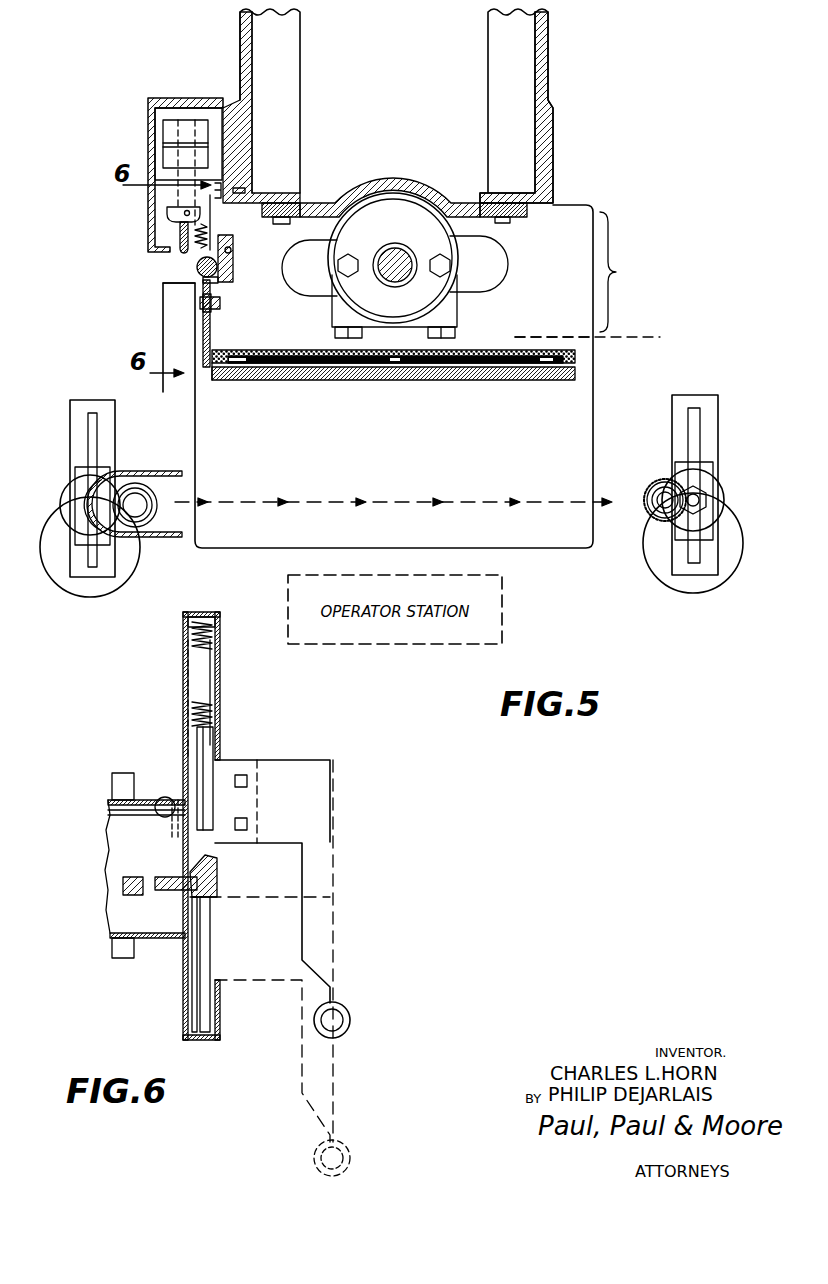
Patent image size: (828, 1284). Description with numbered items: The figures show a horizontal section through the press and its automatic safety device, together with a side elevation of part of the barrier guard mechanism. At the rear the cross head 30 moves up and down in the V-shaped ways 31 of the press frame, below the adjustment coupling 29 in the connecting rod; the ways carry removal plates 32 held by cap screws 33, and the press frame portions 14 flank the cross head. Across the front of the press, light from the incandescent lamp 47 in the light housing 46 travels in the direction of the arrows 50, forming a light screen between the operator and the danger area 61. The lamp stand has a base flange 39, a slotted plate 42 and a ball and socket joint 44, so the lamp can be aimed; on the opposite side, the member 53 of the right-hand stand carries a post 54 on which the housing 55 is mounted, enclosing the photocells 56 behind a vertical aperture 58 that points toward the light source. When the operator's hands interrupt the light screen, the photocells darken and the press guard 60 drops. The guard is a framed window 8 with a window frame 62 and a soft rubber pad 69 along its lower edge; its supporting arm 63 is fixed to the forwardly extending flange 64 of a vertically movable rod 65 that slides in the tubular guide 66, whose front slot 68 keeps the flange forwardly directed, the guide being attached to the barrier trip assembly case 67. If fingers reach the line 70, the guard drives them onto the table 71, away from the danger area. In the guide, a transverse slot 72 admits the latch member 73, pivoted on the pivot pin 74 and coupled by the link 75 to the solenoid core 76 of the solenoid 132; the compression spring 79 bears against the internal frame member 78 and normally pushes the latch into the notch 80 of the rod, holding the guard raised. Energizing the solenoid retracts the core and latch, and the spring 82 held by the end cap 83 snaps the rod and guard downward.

In FIG. 5, the framed window 8 is at (266, 361).
In FIG. 5, the frame tube 14 is at (553, 78).
In FIG. 5, the adjustment coupling 29 is at (389, 283).
In FIG. 5, the cross head 30 is at (364, 228).
In FIG. 5, the V-shaped ways 31 is at (318, 196).
In FIG. 5, the removal plates 32 is at (286, 219).
In FIG. 5, the cap screws 33 is at (283, 225).
In FIG. 5, the base flange 39 is at (50, 556).
In FIG. 5, the slotted plate 42 is at (70, 438).
In FIG. 5, the ball and socket joint 44 is at (65, 503).
In FIG. 5, the light housing 46 is at (148, 470).
In FIG. 5, the incandescent lamp 47 is at (153, 497).
In FIG. 5, the arrows 50 is at (268, 500).
In FIG. 5, the member of right-hand stand 53 is at (705, 492).
In FIG. 5, the post 54 is at (705, 499).
In FIG. 5, the housing 55 is at (652, 488).
In FIG. 5, the photocells 56 is at (661, 487).
In FIG. 5, the vertical aperture 58 is at (655, 505).
In FIG. 5, the press guard 60 is at (524, 346).
In FIG. 6, the press guard 60 is at (340, 884).
In FIG. 5, the danger area 61 is at (620, 272).
In FIG. 5, the window frame 62 is at (223, 382).
In FIG. 5, the supporting arm 63 is at (211, 334).
In FIG. 6, the supporting arm 63 is at (286, 767).
In FIG. 5, the forwardly extending flange 64 is at (221, 310).
In FIG. 6, the forwardly extending flange 64 is at (258, 790).
In FIG. 5, the vertically movable rod 65 is at (234, 266).
In FIG. 6, the vertically movable rod 65 is at (204, 748).
In FIG. 5, the tubular guide 66 is at (196, 277).
In FIG. 6, the tubular guide 66 is at (221, 696).
In FIG. 5, the barrier trip assembly case 67 is at (188, 96).
In FIG. 6, the barrier trip assembly case 67 is at (158, 945).
In FIG. 5, the slot 68 is at (218, 281).
In FIG. 6, the slot 68 is at (221, 936).
In FIG. 5, the soft rubber pad 69 is at (467, 380).
In FIG. 6, the soft rubber pad 69 is at (350, 1016).
In FIG. 5, the line 70 is at (648, 338).
In FIG. 5, the table 71 is at (570, 424).
In FIG. 5, the transverse slot 72 is at (197, 267).
In FIG. 6, the transverse slot 72 is at (191, 871).
In FIG. 5, the latch member 73 is at (180, 252).
In FIG. 6, the latch member 73 is at (176, 892).
In FIG. 5, the pivot pin 74 is at (232, 251).
In FIG. 6, the pivot pin 74 is at (165, 797).
In FIG. 5, the link 75 is at (181, 229).
In FIG. 5, the solenoid core 76 is at (180, 193).
In FIG. 5, the internal frame member 78 is at (245, 192).
In FIG. 6, the internal frame member 78 is at (123, 886).
In FIG. 5, the compression spring 79 is at (209, 233).
In FIG. 6, the notch 80 is at (300, 896).
In FIG. 6, the spring 82 is at (196, 640).
In FIG. 6, the end cap 83 is at (207, 613).
In FIG. 5, the solenoid 132 is at (170, 150).